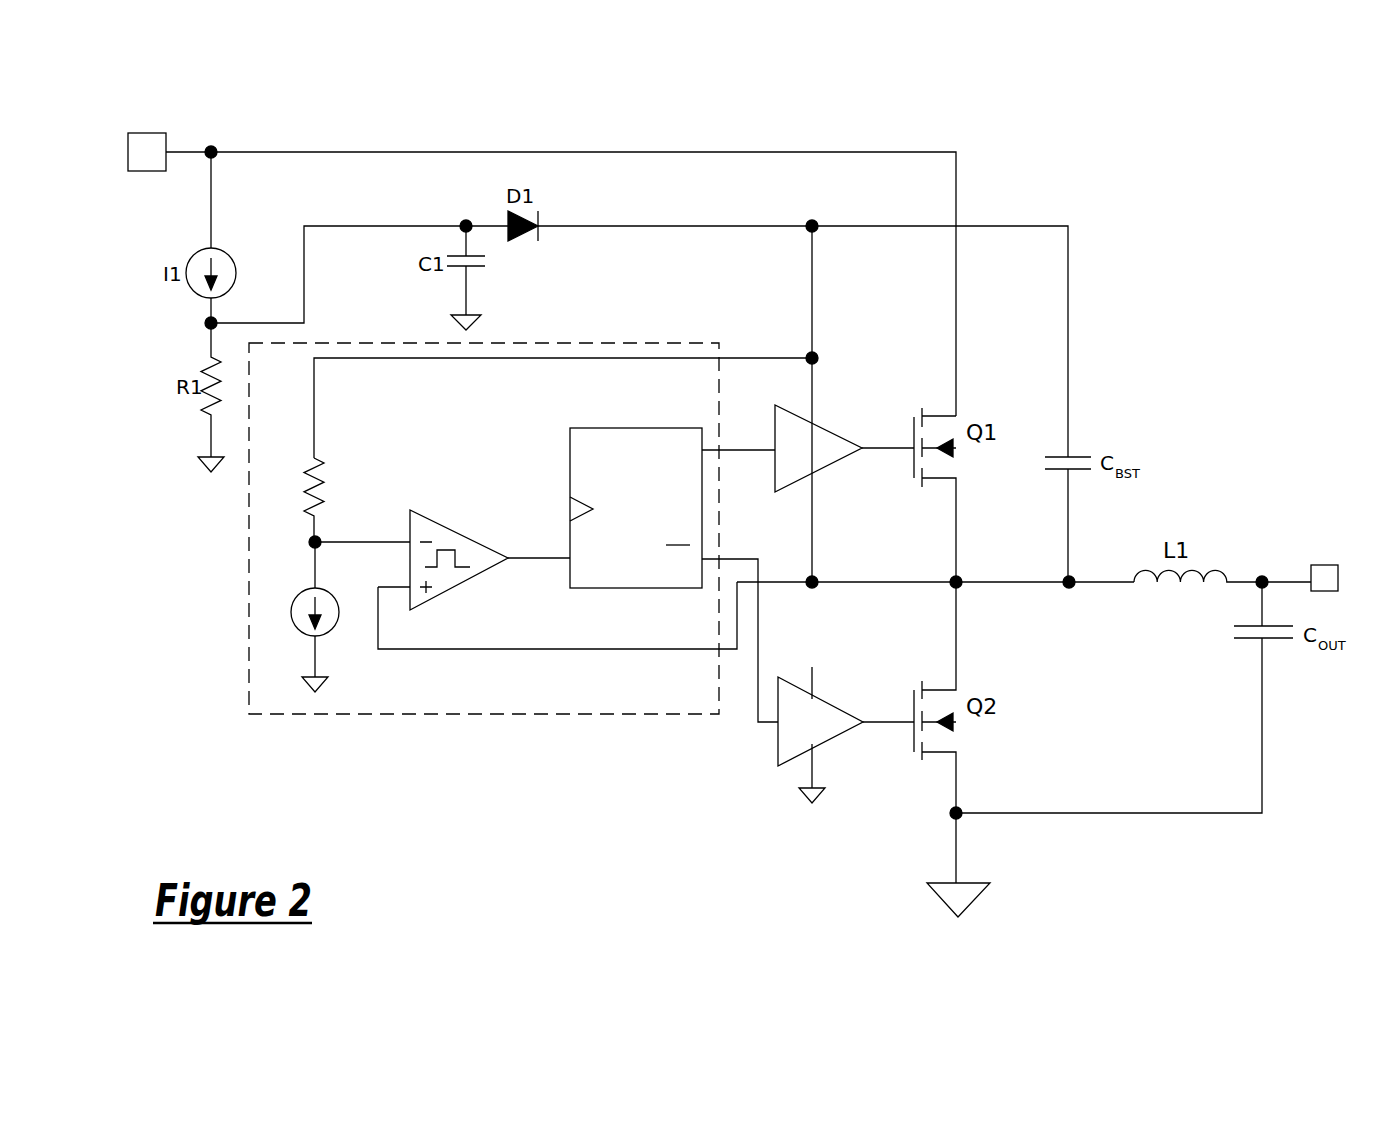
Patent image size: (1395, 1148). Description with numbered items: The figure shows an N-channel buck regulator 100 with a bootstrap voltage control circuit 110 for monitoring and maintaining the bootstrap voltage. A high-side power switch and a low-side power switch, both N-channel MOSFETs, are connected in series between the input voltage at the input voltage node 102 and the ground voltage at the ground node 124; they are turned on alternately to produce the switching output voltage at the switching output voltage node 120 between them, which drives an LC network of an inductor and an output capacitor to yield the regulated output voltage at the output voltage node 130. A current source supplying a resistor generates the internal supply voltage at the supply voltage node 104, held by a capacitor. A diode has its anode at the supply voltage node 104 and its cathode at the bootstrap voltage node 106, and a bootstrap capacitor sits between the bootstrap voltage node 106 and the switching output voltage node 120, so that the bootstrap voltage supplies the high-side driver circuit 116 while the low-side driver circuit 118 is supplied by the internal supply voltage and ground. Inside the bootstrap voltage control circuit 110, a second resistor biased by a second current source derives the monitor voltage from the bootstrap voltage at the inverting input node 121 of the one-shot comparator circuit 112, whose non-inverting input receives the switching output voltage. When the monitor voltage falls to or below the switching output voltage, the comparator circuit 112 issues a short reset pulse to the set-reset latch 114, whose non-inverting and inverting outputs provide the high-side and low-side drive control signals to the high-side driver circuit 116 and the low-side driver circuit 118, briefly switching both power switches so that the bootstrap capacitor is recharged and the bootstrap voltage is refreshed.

The N-channel buck regulator 100 is at (1142, 156).
The input voltage node 102 is at (128, 150).
The VDD voltage node 104 is at (211, 323).
The bootstrap voltage node 106 is at (1003, 226).
The bootstrap voltage control circuit 110 is at (249, 662).
The one-shot comparator circuit 112 is at (428, 512).
The set-reset latch 114 is at (608, 428).
The high-side driver circuit 116 is at (828, 428).
The low-side driver circuit 118 is at (778, 754).
The switching output voltage node 120 is at (962, 586).
The inverting input node 121 is at (314, 544).
The ground node 124 is at (985, 883).
The output voltage node 130 is at (1338, 580).